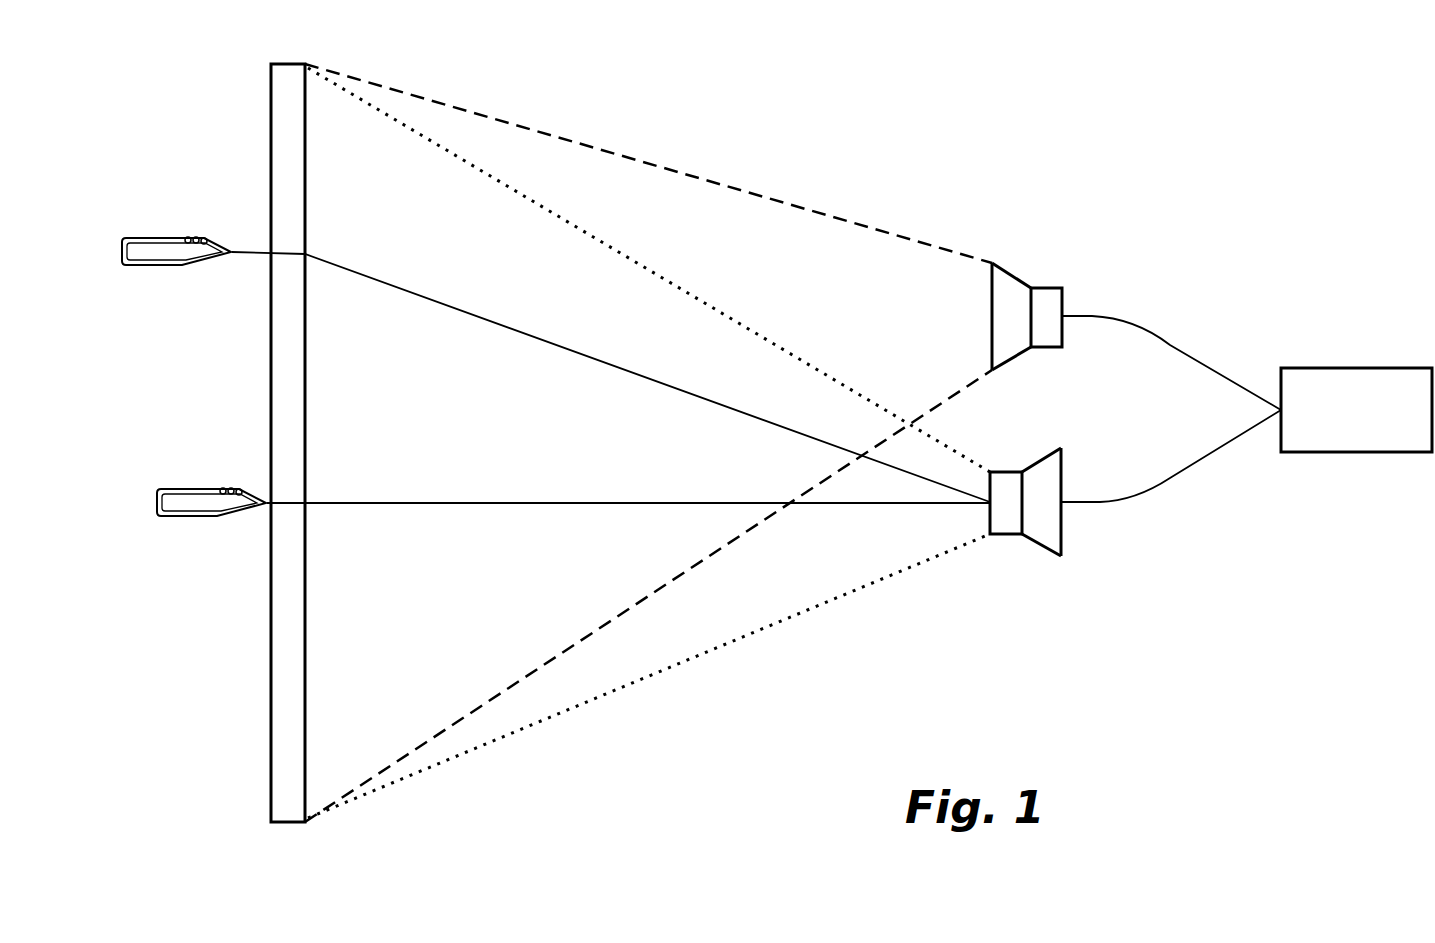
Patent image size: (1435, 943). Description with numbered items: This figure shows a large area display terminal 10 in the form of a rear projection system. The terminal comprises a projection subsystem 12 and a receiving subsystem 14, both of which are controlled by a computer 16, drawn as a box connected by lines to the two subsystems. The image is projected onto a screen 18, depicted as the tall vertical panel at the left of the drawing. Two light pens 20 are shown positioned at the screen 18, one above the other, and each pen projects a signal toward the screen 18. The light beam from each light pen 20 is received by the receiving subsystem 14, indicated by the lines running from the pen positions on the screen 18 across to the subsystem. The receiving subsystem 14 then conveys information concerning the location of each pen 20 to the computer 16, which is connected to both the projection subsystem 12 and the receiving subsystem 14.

The large area display terminal 10 is at (872, 118).
The projection subsystem 12 is at (1047, 288).
The receiving subsystem 14 is at (1037, 543).
The computer 16 is at (1357, 368).
The screen 18 is at (269, 701).
The light pen 20 is at (167, 238).